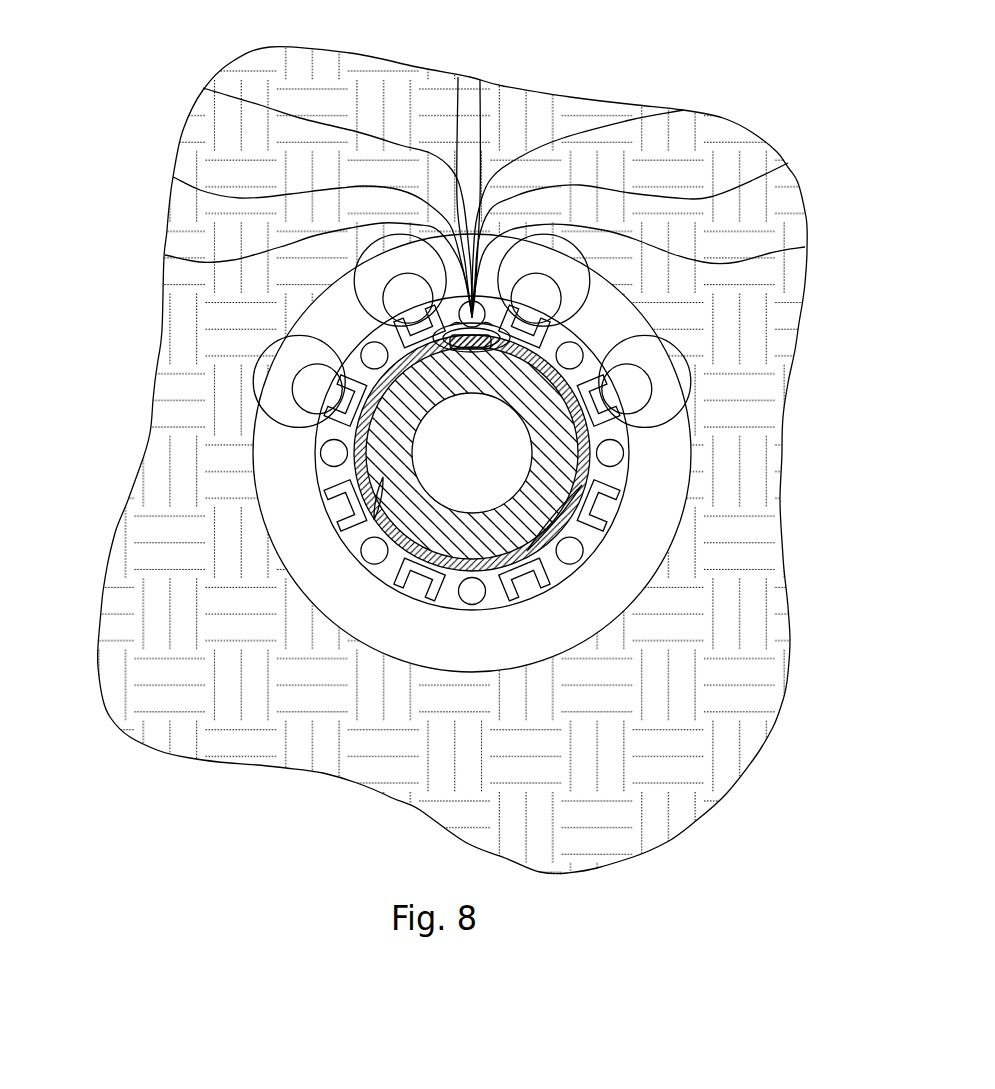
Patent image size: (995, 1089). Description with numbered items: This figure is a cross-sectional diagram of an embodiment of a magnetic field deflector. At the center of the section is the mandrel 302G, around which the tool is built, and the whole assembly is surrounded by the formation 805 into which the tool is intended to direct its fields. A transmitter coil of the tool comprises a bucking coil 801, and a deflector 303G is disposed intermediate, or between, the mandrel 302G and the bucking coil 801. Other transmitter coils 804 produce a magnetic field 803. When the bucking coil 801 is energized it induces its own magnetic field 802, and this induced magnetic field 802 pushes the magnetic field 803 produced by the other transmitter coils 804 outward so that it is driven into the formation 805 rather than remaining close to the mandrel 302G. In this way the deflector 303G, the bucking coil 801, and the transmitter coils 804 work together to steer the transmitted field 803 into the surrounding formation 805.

The bucking coil 801 is at (613, 490).
The magnetic field 802 is at (262, 410).
The magnetic field 803 is at (563, 138).
The transmitter coils 804 is at (472, 318).
The formation 805 is at (180, 359).
The mandrel 302G is at (372, 511).
The deflector 303G is at (557, 518).